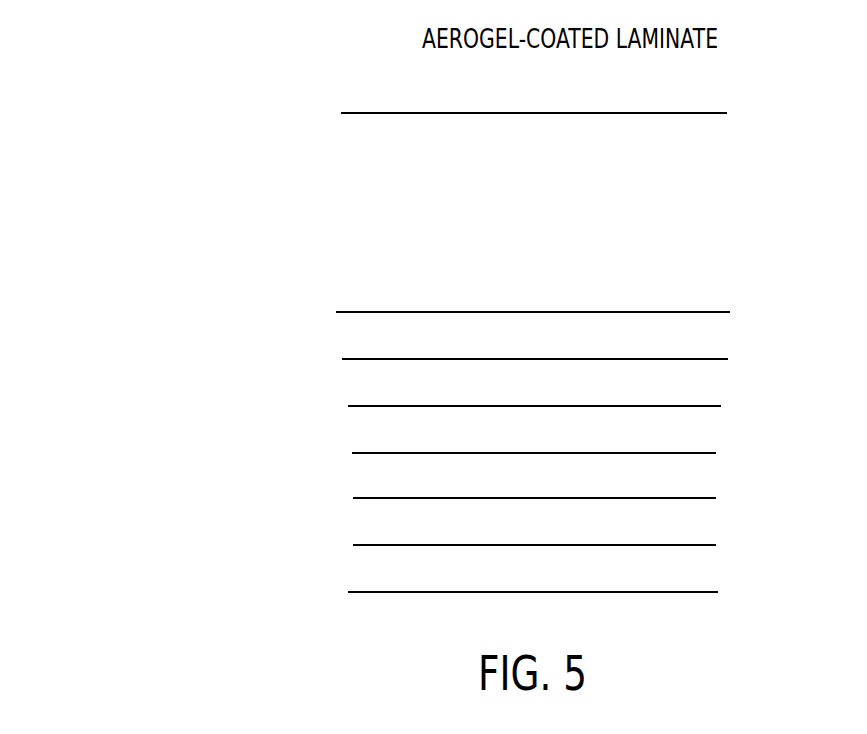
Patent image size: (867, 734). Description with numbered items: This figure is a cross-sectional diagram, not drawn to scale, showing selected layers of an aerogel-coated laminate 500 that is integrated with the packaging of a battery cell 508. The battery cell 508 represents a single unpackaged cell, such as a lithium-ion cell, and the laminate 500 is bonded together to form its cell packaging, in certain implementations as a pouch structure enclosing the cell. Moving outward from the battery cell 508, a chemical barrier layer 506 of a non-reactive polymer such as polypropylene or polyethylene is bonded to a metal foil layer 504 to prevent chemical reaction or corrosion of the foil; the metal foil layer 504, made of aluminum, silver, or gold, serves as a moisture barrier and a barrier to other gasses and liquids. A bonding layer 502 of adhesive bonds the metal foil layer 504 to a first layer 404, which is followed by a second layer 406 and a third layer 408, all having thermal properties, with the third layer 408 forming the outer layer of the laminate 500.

The aerogel-coated laminate 500 is at (155, 51).
The battery cell 508 is at (554, 224).
The chemical barrier layer 506 is at (554, 347).
The metal foil layer 504 is at (554, 394).
The bonding layer 502 is at (554, 441).
The first layer 404 is at (554, 487).
The second layer 406 is at (554, 534).
The third layer 408 is at (554, 581).